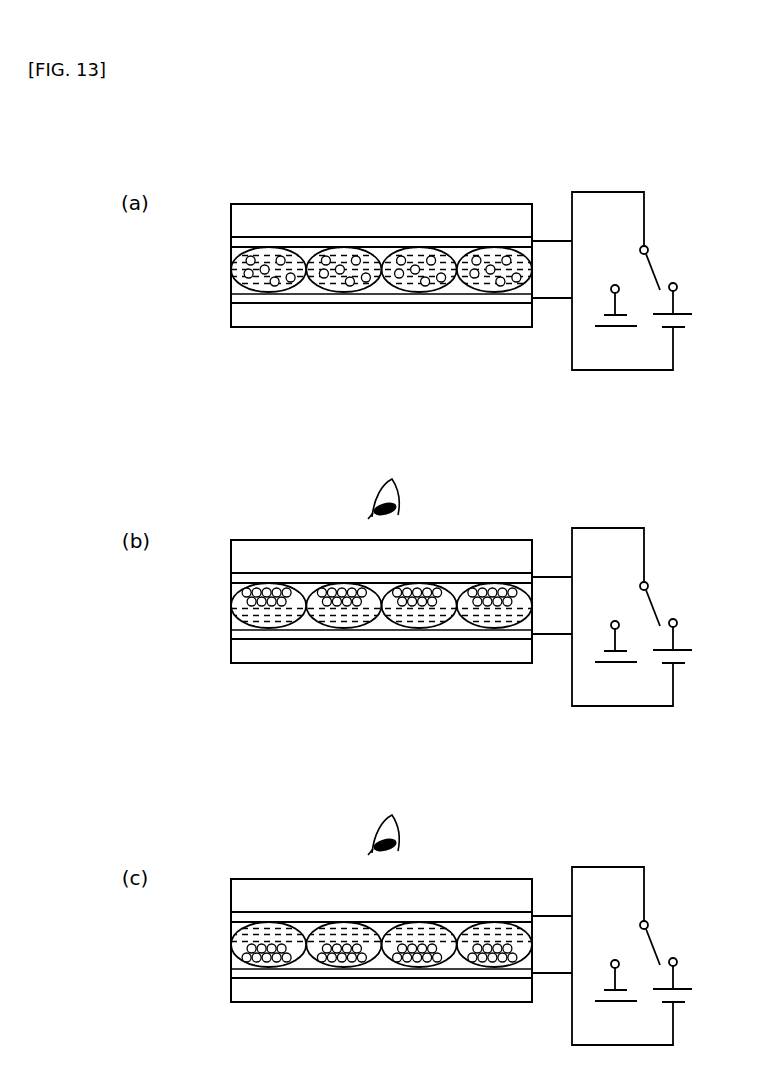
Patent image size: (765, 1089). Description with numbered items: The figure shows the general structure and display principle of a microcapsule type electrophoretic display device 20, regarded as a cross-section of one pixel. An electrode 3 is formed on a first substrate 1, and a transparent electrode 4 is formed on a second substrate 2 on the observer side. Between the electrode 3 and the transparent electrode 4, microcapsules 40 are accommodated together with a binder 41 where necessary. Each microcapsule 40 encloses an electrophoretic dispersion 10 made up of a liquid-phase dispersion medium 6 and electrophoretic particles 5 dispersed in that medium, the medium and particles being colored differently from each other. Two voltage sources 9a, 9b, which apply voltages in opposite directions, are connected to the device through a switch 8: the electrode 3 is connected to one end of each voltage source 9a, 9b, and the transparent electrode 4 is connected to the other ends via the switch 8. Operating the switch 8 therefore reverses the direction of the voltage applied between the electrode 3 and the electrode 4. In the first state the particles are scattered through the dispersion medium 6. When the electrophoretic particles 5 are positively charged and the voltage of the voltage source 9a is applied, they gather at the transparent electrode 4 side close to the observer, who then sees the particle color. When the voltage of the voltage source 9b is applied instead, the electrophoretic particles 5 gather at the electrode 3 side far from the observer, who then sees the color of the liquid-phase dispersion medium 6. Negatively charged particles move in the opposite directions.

The first substrate 1 is at (231, 312).
The second substrate 2 is at (249, 210).
The electrode 3 is at (231, 297).
The transparent electrode 4 is at (233, 242).
The electrophoretic particles 5 is at (402, 256).
The liquid-phase dispersion medium 6 is at (453, 252).
The switch 8 is at (660, 277).
The voltage source 9a is at (598, 327).
The voltage source 9b is at (683, 313).
The electrophoretic dispersion 10 is at (403, 153).
The electrophoretic display device 20 is at (300, 199).
The microcapsules 40 is at (233, 283).
The binder 41 is at (380, 250).